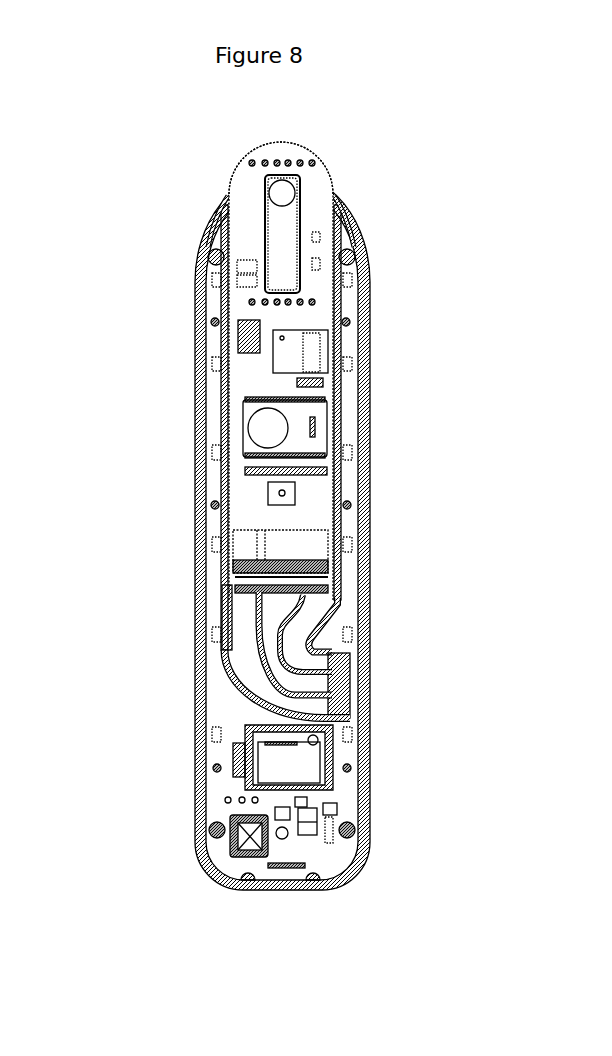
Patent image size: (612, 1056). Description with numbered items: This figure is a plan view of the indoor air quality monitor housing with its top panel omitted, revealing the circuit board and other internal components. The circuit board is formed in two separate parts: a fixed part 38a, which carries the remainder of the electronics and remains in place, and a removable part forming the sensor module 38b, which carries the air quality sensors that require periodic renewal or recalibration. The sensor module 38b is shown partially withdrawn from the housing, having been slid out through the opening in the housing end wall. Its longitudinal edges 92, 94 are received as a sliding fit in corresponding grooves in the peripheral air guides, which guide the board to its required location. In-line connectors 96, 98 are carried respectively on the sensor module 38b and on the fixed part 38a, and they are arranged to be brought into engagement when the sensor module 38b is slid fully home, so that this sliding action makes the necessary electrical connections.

The fixed part 38a is at (346, 604).
The sensor module 38b is at (344, 155).
The longitudinal edge 92 is at (229, 180).
The longitudinal edge 94 is at (331, 190).
The in-line connector 96 is at (280, 522).
The in-line connector 98 is at (258, 588).